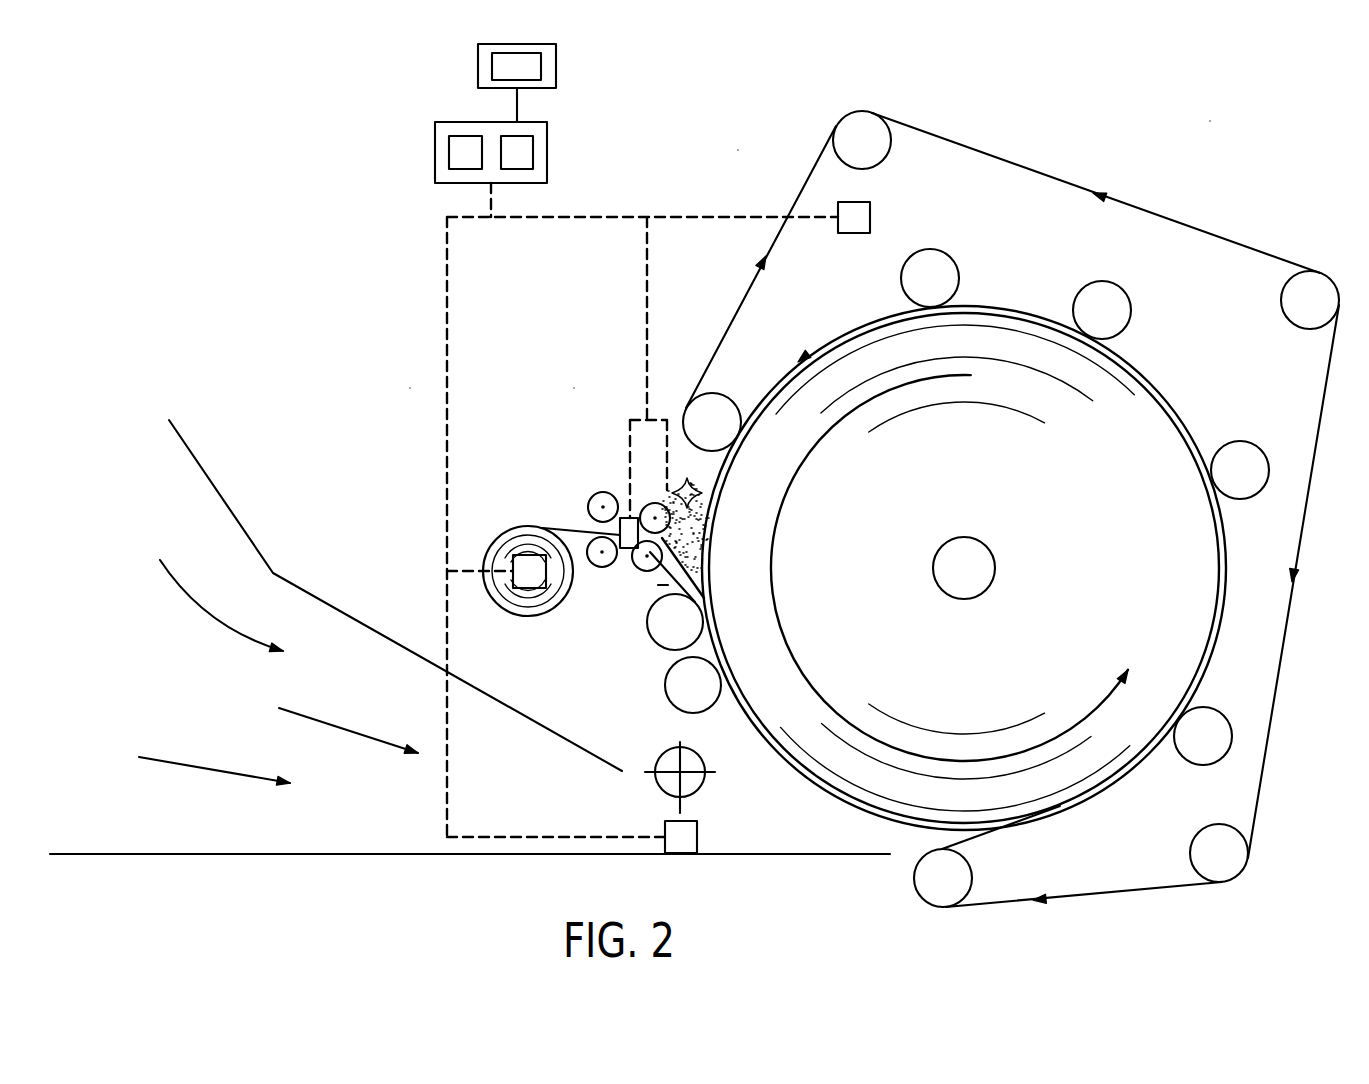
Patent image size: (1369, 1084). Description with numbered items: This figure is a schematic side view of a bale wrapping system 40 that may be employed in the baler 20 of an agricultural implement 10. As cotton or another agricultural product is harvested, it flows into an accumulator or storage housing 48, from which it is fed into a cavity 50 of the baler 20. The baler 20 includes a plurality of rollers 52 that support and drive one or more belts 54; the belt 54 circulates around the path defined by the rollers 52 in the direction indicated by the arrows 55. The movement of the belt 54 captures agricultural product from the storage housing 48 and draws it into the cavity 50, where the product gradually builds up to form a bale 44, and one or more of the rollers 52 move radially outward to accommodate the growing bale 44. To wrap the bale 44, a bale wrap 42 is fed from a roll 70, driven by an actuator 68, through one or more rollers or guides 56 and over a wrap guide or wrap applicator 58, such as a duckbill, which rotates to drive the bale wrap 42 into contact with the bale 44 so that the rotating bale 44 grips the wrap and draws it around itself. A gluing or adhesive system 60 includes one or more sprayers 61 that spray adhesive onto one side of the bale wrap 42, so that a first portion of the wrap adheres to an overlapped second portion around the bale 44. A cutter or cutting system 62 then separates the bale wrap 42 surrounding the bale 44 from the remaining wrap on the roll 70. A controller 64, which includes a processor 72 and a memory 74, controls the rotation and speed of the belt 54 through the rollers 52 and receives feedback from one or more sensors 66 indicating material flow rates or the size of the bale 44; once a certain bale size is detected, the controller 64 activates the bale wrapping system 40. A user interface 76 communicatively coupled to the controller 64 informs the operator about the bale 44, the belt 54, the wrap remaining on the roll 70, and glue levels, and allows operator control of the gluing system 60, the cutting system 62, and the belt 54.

The agricultural implement 10 is at (1216, 115).
The baler 20 is at (732, 145).
The bale wrapping system 40 is at (404, 383).
The bale wrap 42 is at (577, 528).
The bale 44 is at (1138, 410).
The accumulator or storage housing 48 is at (327, 601).
The cavity 50 is at (809, 840).
The rollers 52 is at (852, 128).
The belt 54 is at (1317, 447).
The arrows 55 is at (763, 256).
The rollers and/or guides 56 is at (597, 499).
The wrap guide or wrap applicator 58 is at (662, 588).
The gluing or adhesive system 60 is at (568, 383).
The sprayers 61 is at (701, 520).
The cutter or cutting system 62 is at (643, 516).
The controller 64 is at (490, 122).
The sensors 66 is at (870, 217).
The actuator 68 is at (525, 589).
The roll 70 is at (528, 614).
The processor 72 is at (449, 153).
The memory 74 is at (533, 153).
The user interface 76 is at (478, 67).